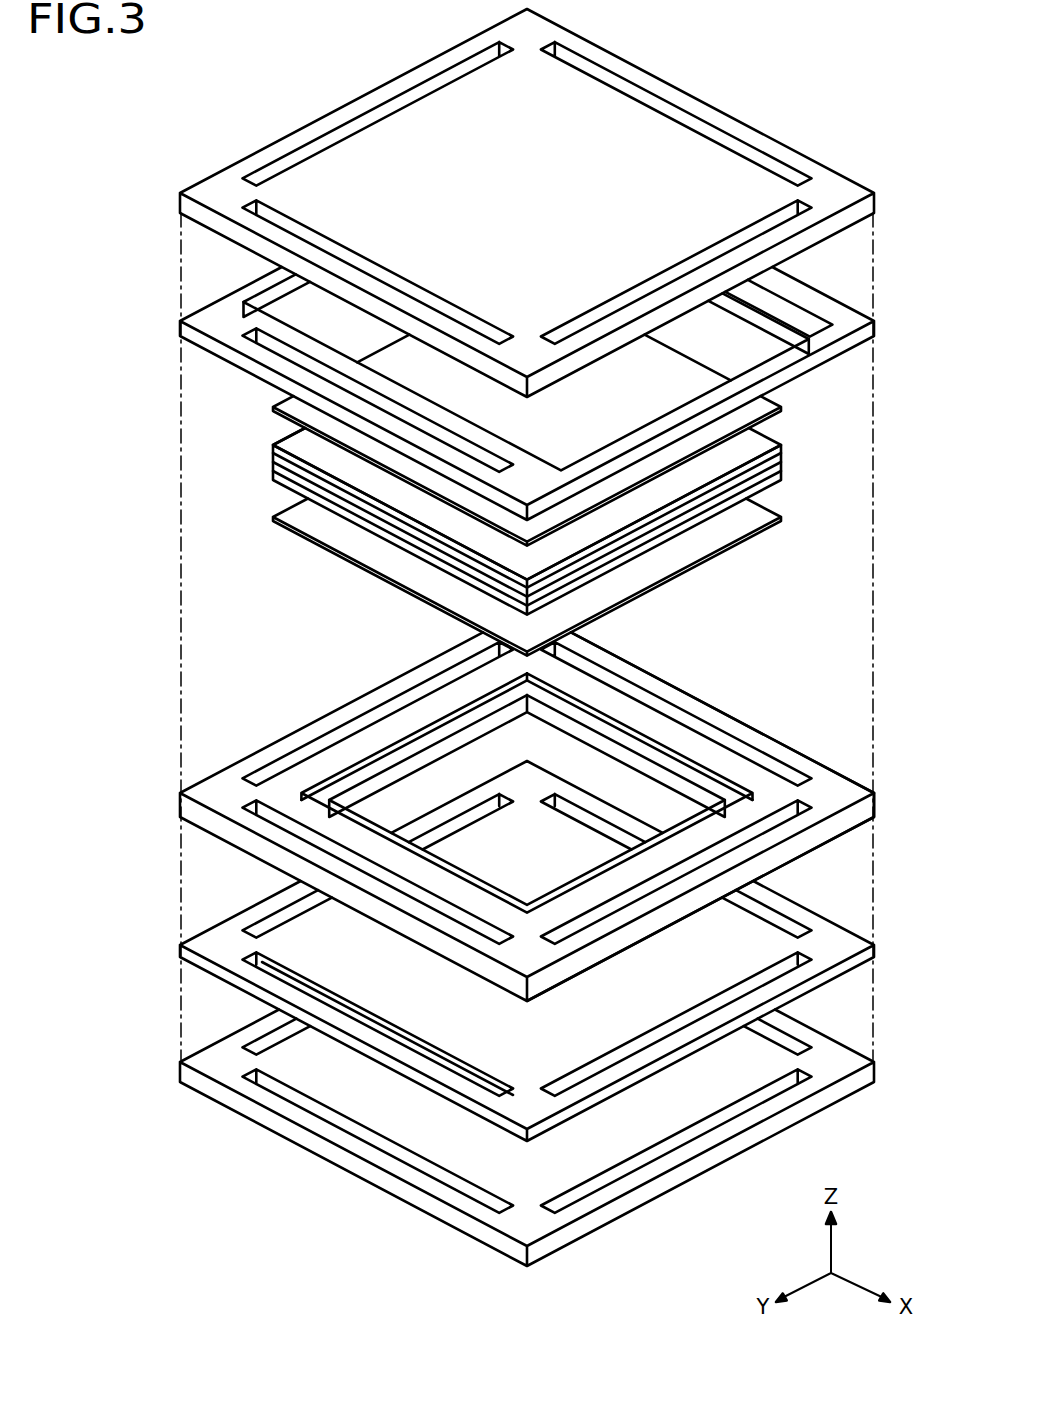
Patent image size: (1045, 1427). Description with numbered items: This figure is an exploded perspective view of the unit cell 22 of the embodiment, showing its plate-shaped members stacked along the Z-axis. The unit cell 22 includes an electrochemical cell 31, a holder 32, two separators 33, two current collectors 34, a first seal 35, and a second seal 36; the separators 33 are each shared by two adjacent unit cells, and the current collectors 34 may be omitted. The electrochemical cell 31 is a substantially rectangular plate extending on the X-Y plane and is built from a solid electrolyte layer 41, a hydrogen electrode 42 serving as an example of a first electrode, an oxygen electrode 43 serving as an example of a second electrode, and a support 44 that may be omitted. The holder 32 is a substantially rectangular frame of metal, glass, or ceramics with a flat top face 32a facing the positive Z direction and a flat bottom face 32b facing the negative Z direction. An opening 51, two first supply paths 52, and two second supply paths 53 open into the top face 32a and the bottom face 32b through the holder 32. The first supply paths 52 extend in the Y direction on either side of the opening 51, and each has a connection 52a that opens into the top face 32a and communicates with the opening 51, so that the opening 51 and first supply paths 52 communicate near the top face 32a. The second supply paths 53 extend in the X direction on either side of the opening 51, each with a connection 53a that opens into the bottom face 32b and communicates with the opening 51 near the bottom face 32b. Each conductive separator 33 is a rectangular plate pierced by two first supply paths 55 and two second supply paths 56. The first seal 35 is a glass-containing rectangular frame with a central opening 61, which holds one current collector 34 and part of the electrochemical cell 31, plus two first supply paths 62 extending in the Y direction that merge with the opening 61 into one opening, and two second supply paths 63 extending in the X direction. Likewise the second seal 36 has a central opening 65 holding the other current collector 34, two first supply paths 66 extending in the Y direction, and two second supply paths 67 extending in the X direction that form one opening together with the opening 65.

The unit cell 22 is at (190, 122).
The electrochemical cell 31 is at (795, 462).
The holder 32 is at (858, 790).
The top face 32a is at (835, 776).
The bottom face 32b is at (856, 822).
The separator 33 is at (850, 183).
The current collector 34 is at (770, 406).
The first seal 35 is at (858, 336).
The second seal 36 is at (876, 943).
The solid electrolyte layer 41 is at (272, 466).
The hydrogen electrode 42 is at (272, 452).
The oxygen electrode 43 is at (272, 478).
The support 44 is at (290, 412).
The opening 51 is at (318, 790).
The first supply path 52 is at (353, 733).
The connection 52a is at (402, 732).
The second supply path 53 is at (283, 828).
The connection 53a is at (575, 712).
The first supply path 55 is at (372, 118).
The second supply path 56 is at (300, 237).
The opening 61 is at (252, 262).
The first supply path 62 is at (255, 292).
The second supply path 63 is at (262, 335).
The opening 65 is at (795, 975).
The first supply path 66 is at (256, 920).
The second supply path 67 is at (260, 945).